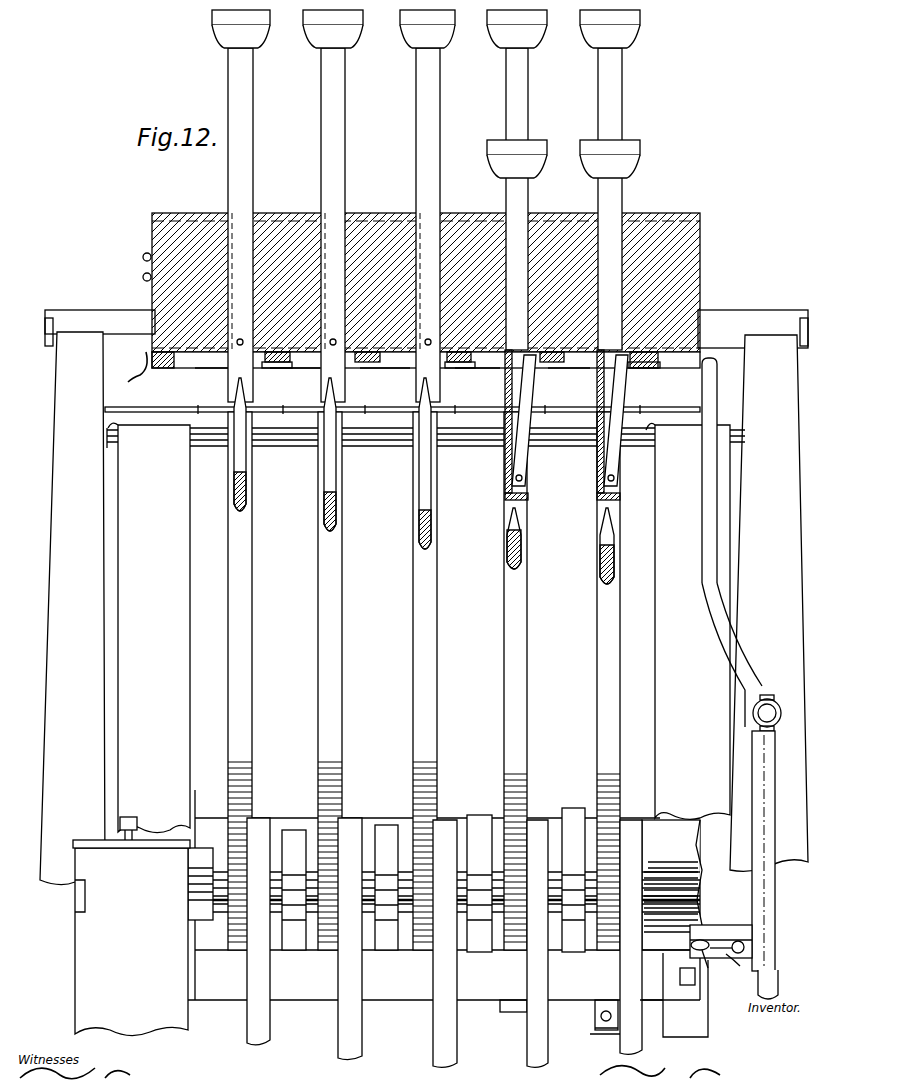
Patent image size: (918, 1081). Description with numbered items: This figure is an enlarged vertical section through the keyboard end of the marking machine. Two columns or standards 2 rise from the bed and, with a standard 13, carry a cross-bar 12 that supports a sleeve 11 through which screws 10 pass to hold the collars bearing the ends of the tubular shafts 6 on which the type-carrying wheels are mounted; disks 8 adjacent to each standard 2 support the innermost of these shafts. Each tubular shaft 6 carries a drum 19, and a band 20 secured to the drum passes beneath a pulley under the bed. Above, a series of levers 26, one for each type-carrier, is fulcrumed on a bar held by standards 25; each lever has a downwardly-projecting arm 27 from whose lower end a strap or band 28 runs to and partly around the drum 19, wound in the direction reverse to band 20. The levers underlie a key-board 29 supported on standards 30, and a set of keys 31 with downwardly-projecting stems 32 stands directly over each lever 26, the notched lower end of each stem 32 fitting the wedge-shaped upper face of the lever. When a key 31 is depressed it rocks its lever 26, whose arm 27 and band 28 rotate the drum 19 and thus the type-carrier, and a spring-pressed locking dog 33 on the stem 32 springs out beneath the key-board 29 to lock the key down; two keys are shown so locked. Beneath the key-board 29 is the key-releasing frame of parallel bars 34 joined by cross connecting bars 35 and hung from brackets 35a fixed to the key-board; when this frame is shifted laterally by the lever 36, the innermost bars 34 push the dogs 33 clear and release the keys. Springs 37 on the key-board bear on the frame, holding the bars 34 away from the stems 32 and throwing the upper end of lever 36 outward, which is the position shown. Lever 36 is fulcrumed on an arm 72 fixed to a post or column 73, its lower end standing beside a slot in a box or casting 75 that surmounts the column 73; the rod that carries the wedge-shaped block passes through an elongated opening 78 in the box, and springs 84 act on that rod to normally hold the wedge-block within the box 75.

The columns or standards 2 is at (131, 926).
The hollow sleeve or tubular shaft 6 is at (673, 876).
The disks 8 is at (200, 850).
The screws 10 is at (570, 814).
The sleeve 11 is at (294, 830).
The cross-bar 12 is at (583, 998).
The standard 13 is at (676, 1036).
The drum 19 is at (415, 820).
The band 20 is at (620, 950).
The standards 25 is at (419, 627).
The levers 26 is at (323, 506).
The downwardly-projecting arm 27 is at (238, 748).
The strap or band 28 is at (652, 847).
The key-board 29 is at (160, 238).
The standards 30 is at (424, 608).
The keys 31 is at (313, 35).
The stems 32 is at (318, 191).
The spring-pressed detent or locking dog 33 is at (346, 214).
The parallel bars 34 is at (371, 362).
The cross connecting bars 35 is at (305, 366).
The brackets 35a is at (455, 368).
The lever 36 is at (710, 485).
The springs 37 is at (135, 380).
The arm 72 is at (754, 904).
The post or column 73 is at (742, 1000).
The box or casting 75 is at (711, 940).
The elongated opening 78 is at (746, 950).
The springs 84 is at (740, 966).